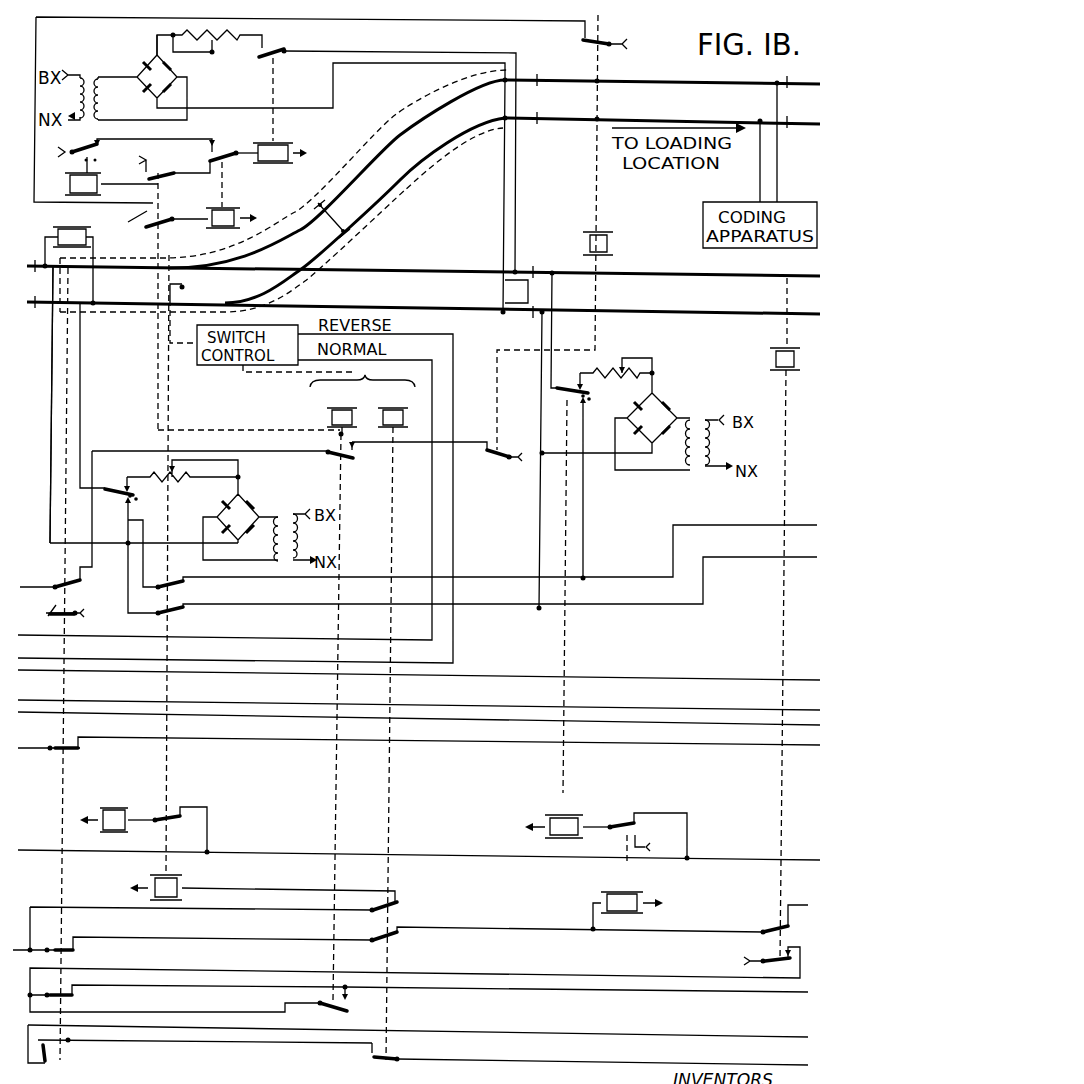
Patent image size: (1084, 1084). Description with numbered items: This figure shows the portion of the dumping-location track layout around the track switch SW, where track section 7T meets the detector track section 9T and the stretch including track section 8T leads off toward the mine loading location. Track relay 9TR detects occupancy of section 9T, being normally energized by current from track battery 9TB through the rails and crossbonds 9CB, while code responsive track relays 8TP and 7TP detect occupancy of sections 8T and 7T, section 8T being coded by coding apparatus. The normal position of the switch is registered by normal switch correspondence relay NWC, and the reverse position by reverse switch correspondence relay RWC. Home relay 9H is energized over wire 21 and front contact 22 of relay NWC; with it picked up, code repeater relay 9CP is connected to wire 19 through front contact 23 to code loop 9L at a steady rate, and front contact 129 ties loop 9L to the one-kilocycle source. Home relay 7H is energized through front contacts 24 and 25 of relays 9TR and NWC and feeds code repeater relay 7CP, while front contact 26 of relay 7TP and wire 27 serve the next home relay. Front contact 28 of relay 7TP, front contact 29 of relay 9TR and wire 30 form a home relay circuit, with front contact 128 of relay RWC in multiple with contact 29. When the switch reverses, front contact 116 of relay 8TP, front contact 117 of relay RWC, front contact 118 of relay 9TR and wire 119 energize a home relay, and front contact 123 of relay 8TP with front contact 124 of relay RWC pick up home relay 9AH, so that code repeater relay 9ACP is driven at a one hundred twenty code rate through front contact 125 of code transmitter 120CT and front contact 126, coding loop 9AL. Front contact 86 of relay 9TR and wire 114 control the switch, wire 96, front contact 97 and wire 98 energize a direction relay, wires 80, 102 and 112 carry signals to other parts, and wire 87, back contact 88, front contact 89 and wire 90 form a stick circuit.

The front contact of track relay 8TP 123 is at (581, 33).
The front contact of code transmitter 120CT 125 is at (124, 150).
The front contact of home relay 9AH 126 is at (234, 167).
The front contact of switch correspondence relay RWC 124 is at (155, 225).
The code transmitter 120CT is at (137, 177).
The code repeater relay 9ACP is at (382, 161).
The home relay 9AH is at (240, 206).
The track relay 9TR is at (69, 256).
The loop 9AL is at (432, 98).
The crossbonds 9CB is at (515, 179).
The track battery 9TB is at (338, 208).
The track section 8T is at (722, 122).
The track section 7T is at (723, 313).
The detector track section 9T is at (392, 310).
The loop 9L is at (500, 302).
The track relay 8TP is at (600, 234).
The track relay 7TP is at (786, 619).
The track switch SW is at (192, 313).
The reverse switch correspondence relay RWC is at (338, 412).
The normal switch correspondence relay NWC is at (389, 407).
The front contact of switch correspondence relay RWC 117 is at (289, 457).
The front contact of relay 8TP 116 is at (487, 452).
The wire 114 is at (22, 589).
The wire 119 is at (37, 589).
The front contact of track relay 9TR 118 is at (81, 578).
The front contact of home relay 9H 129 is at (186, 581).
The wires 80 is at (769, 554).
The front contact of track relay 9TR 86 is at (65, 612).
The wires 102 is at (36, 672).
The wire 112 is at (80, 684).
The wire 96 is at (44, 750).
The front contact of track relay 9TR 97 is at (79, 740).
The wire 98 is at (762, 746).
The code repeater relay 9CP is at (97, 809).
The front contact of relay 9H 23 is at (183, 811).
The wire 19 is at (50, 851).
The home relay 9H is at (144, 876).
The front contact of switch correspondence relay NWC 22 is at (398, 905).
The wire 21 is at (19, 947).
The front contact of relay 9TR 24 is at (78, 942).
The front contact of relay NWC 25 is at (398, 933).
The front contact of relay 7TP 26 is at (762, 926).
The wire 27 is at (803, 906).
The code repeater relay 7CP is at (595, 827).
The home relay 7H is at (638, 899).
The front contact of track relay 7TP 28 is at (773, 953).
The front contact of track relay 9TR 29 is at (74, 991).
The front contact of reverse switch correspondence relay RWC 128 is at (349, 1000).
The wire 30 is at (781, 993).
The wire 87 is at (690, 1036).
The back contact of relay 9TR 88 is at (49, 1054).
The front contact of switch correspondence relay NWC 89 is at (368, 1050).
The wire 90 is at (708, 1064).